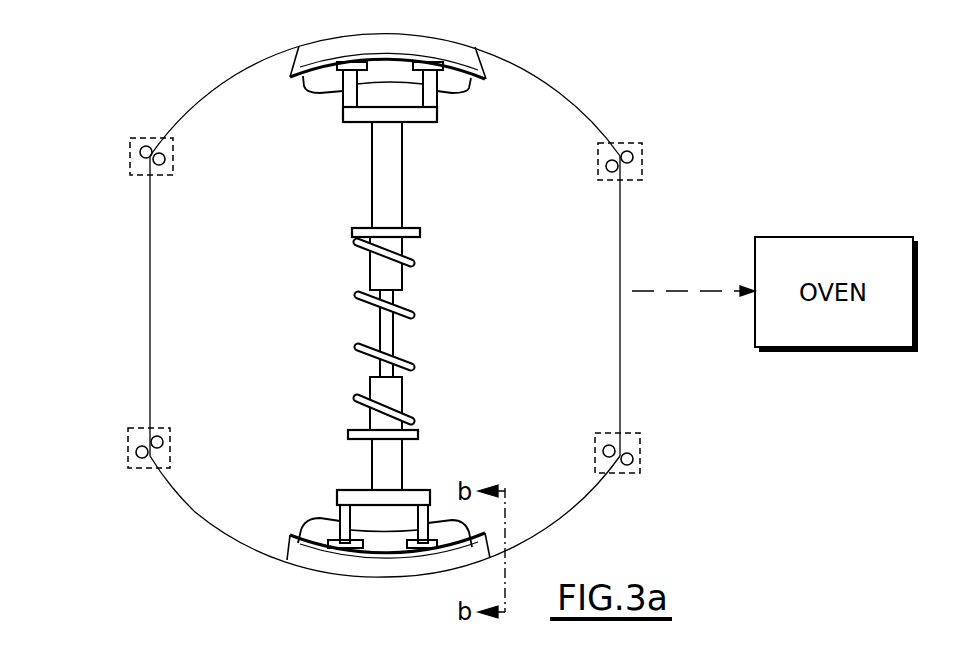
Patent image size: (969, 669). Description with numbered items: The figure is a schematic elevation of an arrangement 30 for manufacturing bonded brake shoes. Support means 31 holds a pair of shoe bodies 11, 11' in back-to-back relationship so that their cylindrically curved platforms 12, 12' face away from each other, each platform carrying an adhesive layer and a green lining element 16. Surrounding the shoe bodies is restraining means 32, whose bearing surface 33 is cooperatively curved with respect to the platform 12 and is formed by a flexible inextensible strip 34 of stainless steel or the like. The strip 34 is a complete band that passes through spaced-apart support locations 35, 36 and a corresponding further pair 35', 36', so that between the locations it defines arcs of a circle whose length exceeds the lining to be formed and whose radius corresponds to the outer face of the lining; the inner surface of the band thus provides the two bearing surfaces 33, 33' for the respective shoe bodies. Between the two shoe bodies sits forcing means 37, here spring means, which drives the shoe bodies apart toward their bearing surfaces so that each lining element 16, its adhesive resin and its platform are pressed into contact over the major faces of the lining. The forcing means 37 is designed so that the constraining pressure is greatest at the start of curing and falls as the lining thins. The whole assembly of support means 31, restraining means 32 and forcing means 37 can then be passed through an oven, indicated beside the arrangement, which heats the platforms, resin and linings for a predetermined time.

The arrangement 30 is at (133, 267).
The platform 12' is at (231, 49).
The platform 12 is at (222, 555).
The lining element 16 is at (312, 47).
The bearing surface 33' is at (212, 115).
The bearing surface 33 is at (290, 509).
The restraining means 32 is at (165, 508).
The flexible inextensible strip 34 is at (167, 475).
The support location 35' is at (120, 144).
The support location 36' is at (660, 148).
The support location 35 is at (125, 428).
The support location 36 is at (647, 433).
The shoe body 11' is at (381, 137).
The shoe body 11 is at (364, 493).
The support means 31 is at (432, 122).
The forcing means 37 is at (357, 345).